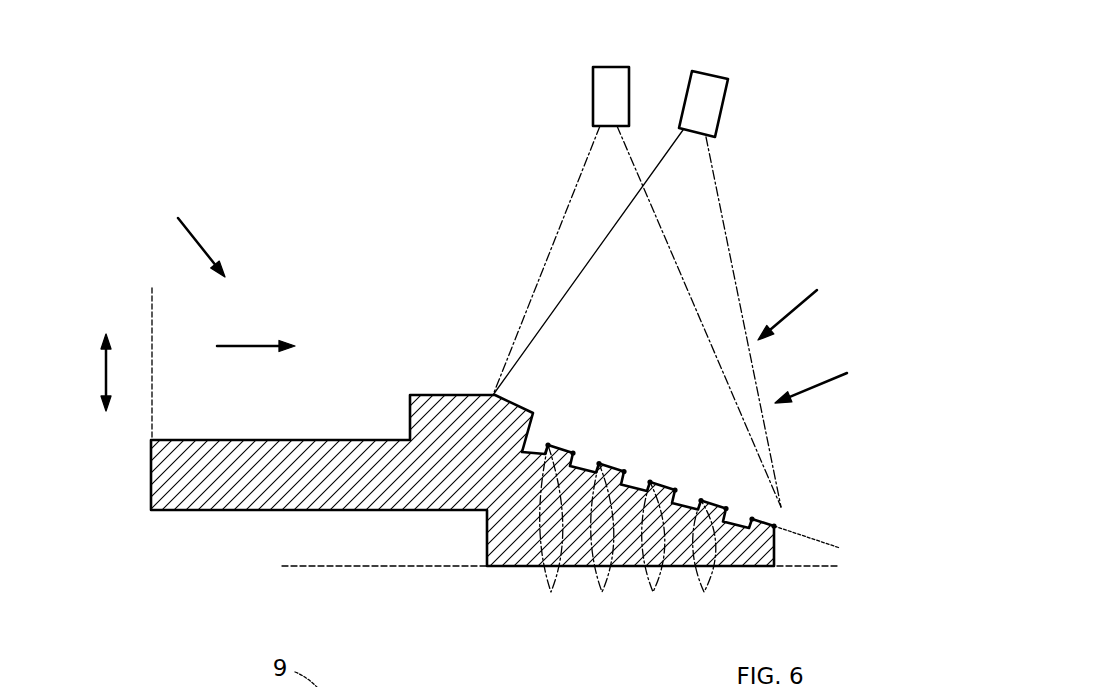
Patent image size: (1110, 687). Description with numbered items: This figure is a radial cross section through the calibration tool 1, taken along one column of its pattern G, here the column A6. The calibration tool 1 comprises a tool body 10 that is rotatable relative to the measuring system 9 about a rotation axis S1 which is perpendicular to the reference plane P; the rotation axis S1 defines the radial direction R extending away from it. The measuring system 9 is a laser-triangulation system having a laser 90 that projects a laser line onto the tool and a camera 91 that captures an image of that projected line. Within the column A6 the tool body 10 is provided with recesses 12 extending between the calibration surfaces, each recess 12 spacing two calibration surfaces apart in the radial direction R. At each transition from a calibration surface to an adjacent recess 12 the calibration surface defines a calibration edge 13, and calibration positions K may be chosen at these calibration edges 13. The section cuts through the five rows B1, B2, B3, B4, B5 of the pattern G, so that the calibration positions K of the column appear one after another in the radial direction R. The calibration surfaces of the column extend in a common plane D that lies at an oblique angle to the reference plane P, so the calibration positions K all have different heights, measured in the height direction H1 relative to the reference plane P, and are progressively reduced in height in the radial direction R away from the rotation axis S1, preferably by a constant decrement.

The calibration tool 1 is at (195, 232).
The measuring system 9 is at (663, 258).
The laser 90 is at (707, 100).
The camera 91 is at (617, 96).
The tool body 10 is at (210, 514).
The recesses 12 is at (546, 443).
The calibration edge 13 is at (568, 465).
The calibration positions K is at (823, 510).
The first row B1 is at (561, 448).
The second row B2 is at (612, 468).
The third row B3 is at (663, 486).
The fourth row B4 is at (712, 505).
The fifth row B5 is at (765, 522).
The common plane D is at (819, 543).
The reference plane P is at (561, 581).
The rotation axis S1 is at (153, 351).
The height H1 is at (90, 372).
The radial direction R is at (256, 330).
The pattern G is at (796, 301).
The sixth column A6 is at (829, 376).